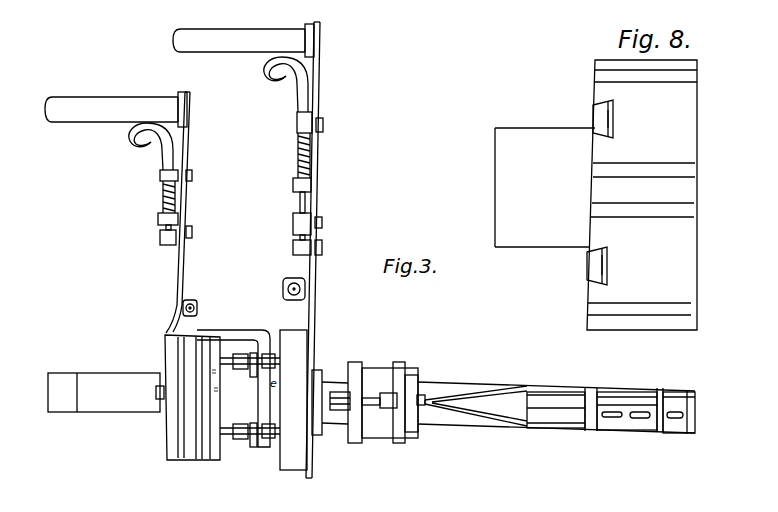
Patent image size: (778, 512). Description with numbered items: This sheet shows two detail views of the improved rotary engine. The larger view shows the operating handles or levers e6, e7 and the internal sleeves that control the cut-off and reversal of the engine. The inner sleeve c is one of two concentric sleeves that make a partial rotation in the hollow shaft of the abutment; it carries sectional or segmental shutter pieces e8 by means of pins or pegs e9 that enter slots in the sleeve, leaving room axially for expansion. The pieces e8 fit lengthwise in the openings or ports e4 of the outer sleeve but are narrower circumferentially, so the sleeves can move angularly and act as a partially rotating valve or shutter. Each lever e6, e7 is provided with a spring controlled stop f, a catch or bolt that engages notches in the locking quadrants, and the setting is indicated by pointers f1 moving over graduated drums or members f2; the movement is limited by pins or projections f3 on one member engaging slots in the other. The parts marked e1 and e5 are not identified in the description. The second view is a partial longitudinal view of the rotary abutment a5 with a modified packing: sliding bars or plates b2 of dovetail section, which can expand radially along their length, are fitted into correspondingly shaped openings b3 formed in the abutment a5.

In FIG. 3, the external operating handle or lever e7 is at (225, 47).
In FIG. 3, the external operating handle or lever e6 is at (98, 112).
In FIG. 3, the spring controlled stop f is at (311, 201).
In FIG. 3, the inner sleeve c is at (106, 392).
In FIG. 3, the graduated drum f2 is at (185, 333).
In FIG. 3, the pointer f1 is at (262, 327).
In FIG. 3, the pin or projection f3 is at (228, 353).
In FIG. 3, the tapered shaft portion e1 is at (486, 389).
In FIG. 3, the shaft section e5 is at (550, 391).
In FIG. 3, the opening or port e4 is at (617, 397).
In FIG. 3, the pin or peg e9 is at (608, 414).
In FIG. 3, the shutter piece e8 is at (647, 419).
In FIG. 8, the rotary abutment a5 is at (597, 60).
In FIG. 8, the sliding bar or plate b2 is at (595, 105).
In FIG. 8, the opening b3 is at (613, 120).